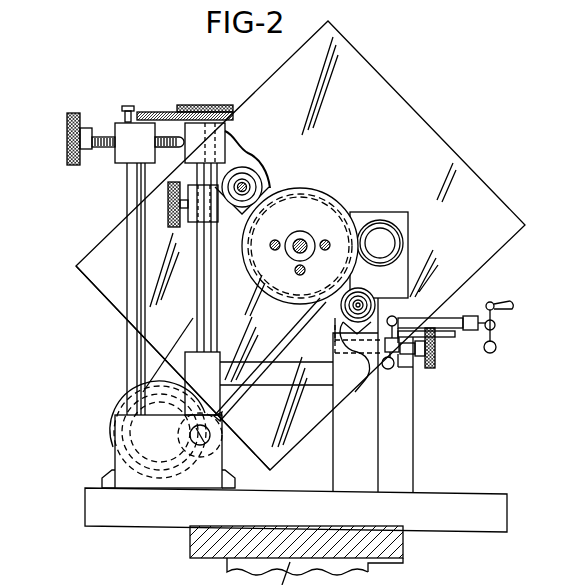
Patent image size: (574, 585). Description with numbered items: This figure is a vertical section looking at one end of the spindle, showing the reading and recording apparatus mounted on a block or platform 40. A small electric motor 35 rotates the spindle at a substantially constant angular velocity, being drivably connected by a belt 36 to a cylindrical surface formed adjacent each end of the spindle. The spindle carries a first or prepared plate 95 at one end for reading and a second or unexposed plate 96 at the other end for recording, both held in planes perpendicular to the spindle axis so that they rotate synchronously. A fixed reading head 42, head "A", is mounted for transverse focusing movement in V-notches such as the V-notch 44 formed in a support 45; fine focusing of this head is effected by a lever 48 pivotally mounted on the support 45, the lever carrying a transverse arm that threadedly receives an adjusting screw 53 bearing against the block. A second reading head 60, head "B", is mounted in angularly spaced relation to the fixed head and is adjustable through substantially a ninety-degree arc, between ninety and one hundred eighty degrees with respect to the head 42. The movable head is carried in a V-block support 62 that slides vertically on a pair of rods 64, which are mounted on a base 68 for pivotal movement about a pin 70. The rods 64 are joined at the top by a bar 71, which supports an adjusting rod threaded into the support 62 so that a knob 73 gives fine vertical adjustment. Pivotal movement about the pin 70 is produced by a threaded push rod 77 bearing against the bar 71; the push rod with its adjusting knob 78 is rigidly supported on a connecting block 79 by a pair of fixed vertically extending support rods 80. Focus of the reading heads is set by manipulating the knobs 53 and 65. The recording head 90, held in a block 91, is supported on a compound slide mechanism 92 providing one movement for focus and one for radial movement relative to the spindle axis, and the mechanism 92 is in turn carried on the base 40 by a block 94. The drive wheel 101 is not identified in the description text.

The electric motor 35 is at (108, 428).
The belt 36 is at (165, 378).
The block or platform 40 is at (150, 517).
The fixed reading head 42 is at (375, 294).
The V-notch 44 is at (338, 330).
The support 45 is at (372, 437).
The lever 48 is at (397, 355).
The adjusting screw 53 is at (430, 358).
The second reading head 60 is at (248, 172).
The V-block support 62 is at (268, 188).
The rods 64 is at (200, 290).
The knob 65 is at (173, 205).
The base 68 is at (125, 475).
The pin 70 is at (205, 437).
The bar 71 is at (228, 123).
The knob 73 is at (200, 107).
The threaded push rod 77 is at (108, 134).
The adjusting knob 78 is at (67, 135).
The connecting block 79 is at (122, 133).
The support rods 80 is at (130, 185).
The recording head 90 is at (377, 230).
The block 91 is at (400, 217).
The compound slide mechanism 92 is at (449, 346).
The block 94 is at (400, 413).
The prepared plate 95 is at (100, 252).
The unexposed plate 96 is at (384, 80).
The drive wheel 101 is at (312, 202).